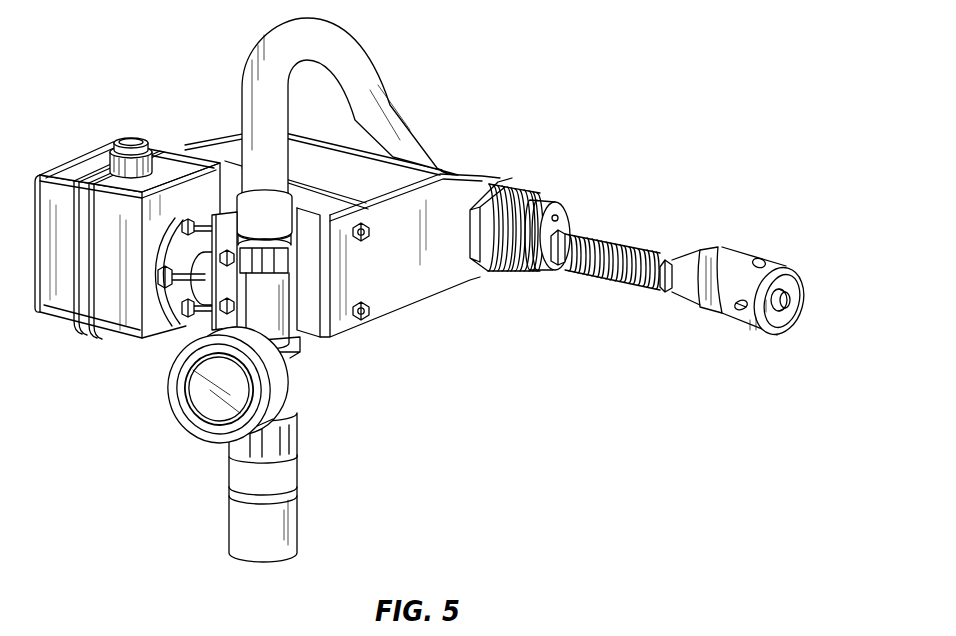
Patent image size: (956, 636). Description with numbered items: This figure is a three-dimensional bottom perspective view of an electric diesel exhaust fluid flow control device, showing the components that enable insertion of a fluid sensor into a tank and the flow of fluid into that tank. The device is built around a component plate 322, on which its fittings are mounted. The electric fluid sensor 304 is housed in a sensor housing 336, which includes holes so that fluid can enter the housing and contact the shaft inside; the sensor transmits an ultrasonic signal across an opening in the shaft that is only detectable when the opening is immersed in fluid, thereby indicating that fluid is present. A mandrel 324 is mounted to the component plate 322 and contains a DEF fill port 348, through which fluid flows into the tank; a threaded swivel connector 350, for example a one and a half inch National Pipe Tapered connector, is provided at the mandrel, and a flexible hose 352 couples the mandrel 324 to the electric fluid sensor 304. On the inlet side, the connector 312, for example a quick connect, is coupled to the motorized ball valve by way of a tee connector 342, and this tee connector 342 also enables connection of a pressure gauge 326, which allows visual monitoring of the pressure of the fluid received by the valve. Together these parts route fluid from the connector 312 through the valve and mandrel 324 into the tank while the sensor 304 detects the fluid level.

The electric fluid sensor 304 is at (755, 268).
The connector 312 is at (300, 520).
The component plate 322 is at (407, 295).
The mandrel 324 is at (572, 183).
The pressure gauge 326 is at (177, 428).
The sensor housing 336 is at (745, 242).
The tee connector 342 is at (283, 345).
The DEF fill port 348 is at (559, 216).
The threaded swivel connector 350 is at (579, 253).
The flexible hose 352 is at (620, 283).